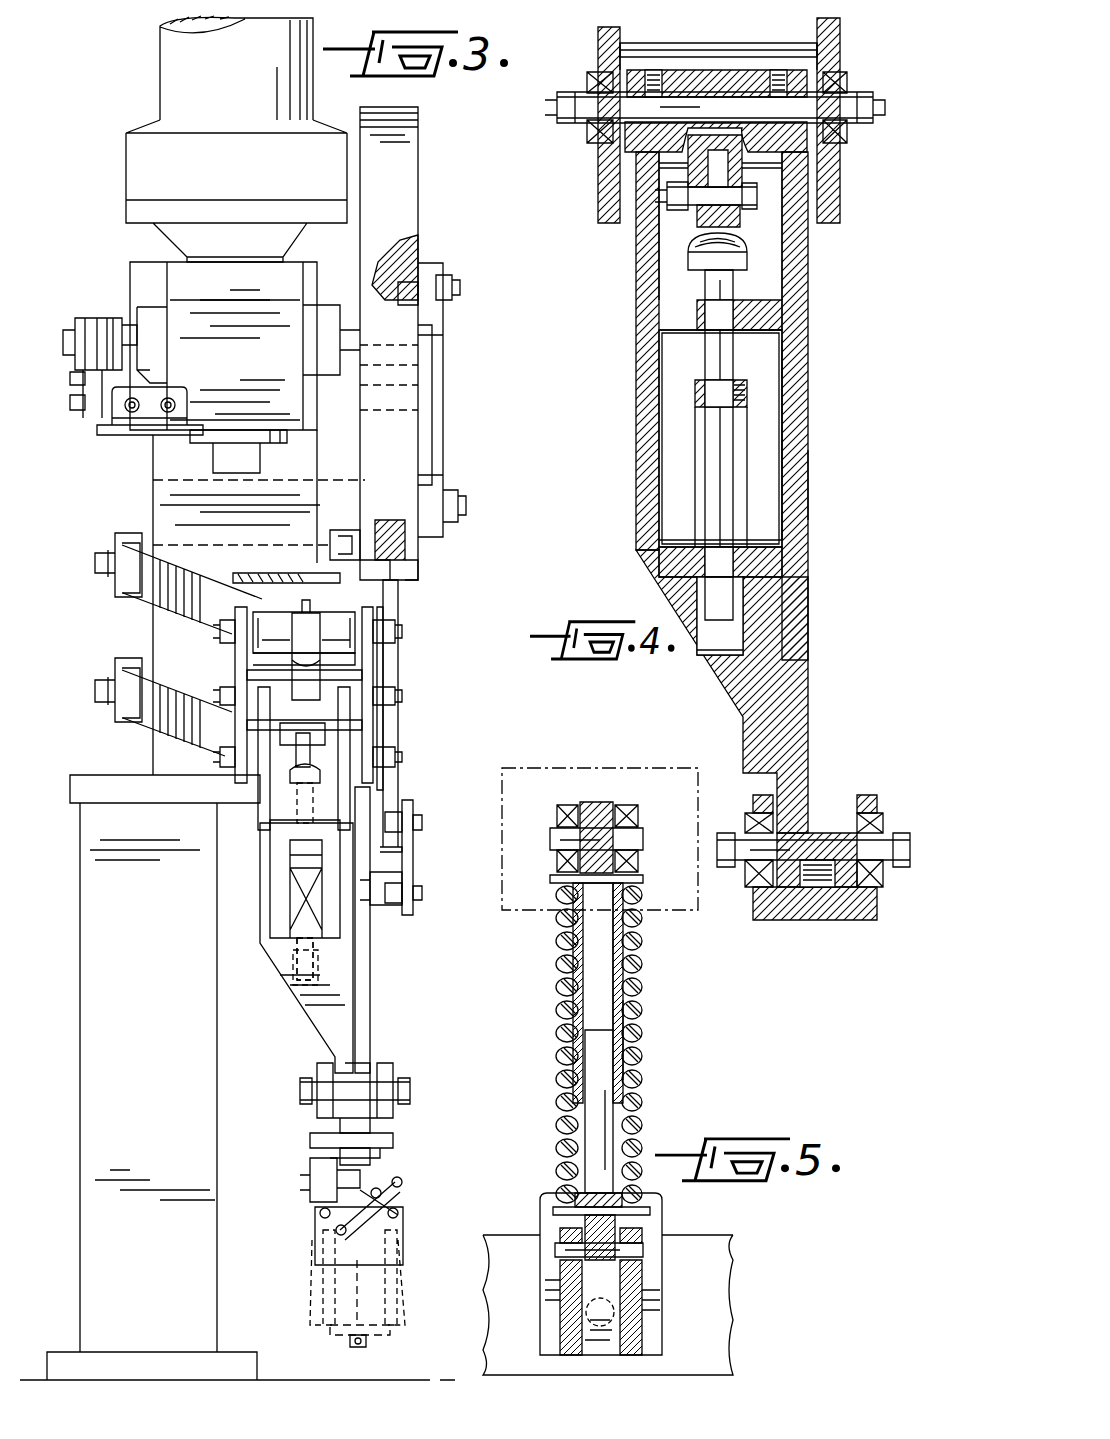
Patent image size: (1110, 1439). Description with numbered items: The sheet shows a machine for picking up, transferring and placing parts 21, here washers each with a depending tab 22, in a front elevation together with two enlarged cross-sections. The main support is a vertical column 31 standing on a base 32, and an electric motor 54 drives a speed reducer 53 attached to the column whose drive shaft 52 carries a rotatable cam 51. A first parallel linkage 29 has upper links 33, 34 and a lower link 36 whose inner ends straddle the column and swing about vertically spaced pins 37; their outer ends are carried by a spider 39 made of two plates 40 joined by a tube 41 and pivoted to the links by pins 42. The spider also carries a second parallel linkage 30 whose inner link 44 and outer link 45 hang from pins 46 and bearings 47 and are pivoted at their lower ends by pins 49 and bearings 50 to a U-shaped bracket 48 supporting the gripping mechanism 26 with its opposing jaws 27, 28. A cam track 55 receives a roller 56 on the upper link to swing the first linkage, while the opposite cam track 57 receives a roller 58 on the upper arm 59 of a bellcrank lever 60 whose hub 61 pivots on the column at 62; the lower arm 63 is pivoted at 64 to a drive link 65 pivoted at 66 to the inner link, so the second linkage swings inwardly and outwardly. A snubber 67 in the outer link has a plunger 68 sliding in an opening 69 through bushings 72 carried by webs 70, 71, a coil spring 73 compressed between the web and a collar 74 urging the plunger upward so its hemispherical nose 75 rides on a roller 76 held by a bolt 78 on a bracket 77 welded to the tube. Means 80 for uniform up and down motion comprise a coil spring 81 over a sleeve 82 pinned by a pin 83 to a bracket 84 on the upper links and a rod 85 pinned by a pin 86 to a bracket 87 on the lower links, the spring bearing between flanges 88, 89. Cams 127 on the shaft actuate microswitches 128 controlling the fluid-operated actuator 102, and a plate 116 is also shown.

In FIG. 3, the part 21 is at (372, 1335).
In FIG. 3, the tab 22 is at (355, 1345).
In FIG. 3, the gripping mechanism 26 is at (412, 1226).
In FIG. 3, the jaw 27 is at (395, 1290).
In FIG. 3, the jaw 28 is at (322, 1275).
In FIG. 3, the parallel linkage 29 is at (205, 684).
In FIG. 3, the parallel linkage 30 is at (262, 976).
In FIG. 4, the parallel linkage 30 is at (830, 486).
In FIG. 3, the column 31 is at (153, 485).
In FIG. 3, the base 32 is at (87, 1063).
In FIG. 3, the upper link 33 is at (398, 598).
In FIG. 3, the upper link 34 is at (170, 605).
In FIG. 3, the lower link 36 is at (165, 725).
In FIG. 3, the pin 37 is at (96, 562).
In FIG. 3, the spider 39 is at (385, 678).
In FIG. 4, the spider 39 is at (840, 50).
In FIG. 3, the plate 40 is at (240, 718).
In FIG. 4, the plate 40 is at (598, 200).
In FIG. 3, the tube 41 is at (355, 645).
In FIG. 4, the tube 41 is at (718, 48).
In FIG. 3, the pin 42 is at (228, 628).
In FIG. 3, the inner link 44 is at (370, 990).
In FIG. 3, the outer link 45 is at (262, 915).
In FIG. 4, the outer link 45 is at (790, 652).
In FIG. 3, the pin 46 is at (395, 700).
In FIG. 4, the pin 46 is at (672, 100).
In FIG. 4, the bearing 47 is at (590, 135).
In FIG. 3, the U-shaped bracket 48 is at (320, 1120).
In FIG. 4, the U-shaped bracket 48 is at (835, 918).
In FIG. 3, the pin 49 is at (400, 1092).
In FIG. 4, the pin 49 is at (830, 840).
In FIG. 4, the bearing 50 is at (745, 830).
In FIG. 3, the cam 51 is at (400, 160).
In FIG. 3, the drive shaft 52 is at (345, 345).
In FIG. 3, the speed reducer 53 is at (205, 270).
In FIG. 3, the electric motor 54 is at (160, 75).
In FIG. 3, the cam track 55 is at (395, 525).
In FIG. 3, the roller 56 is at (385, 560).
In FIG. 3, the cam track 57 is at (405, 245).
In FIG. 3, the roller 58 is at (430, 288).
In FIG. 3, the upper arm 59 is at (445, 325).
In FIG. 3, the bellcrank lever 60 is at (457, 450).
In FIG. 3, the hub 61 is at (435, 535).
In FIG. 3, the pivot 62 is at (470, 507).
In FIG. 3, the lower arm 63 is at (398, 808).
In FIG. 3, the pivot 64 is at (425, 822).
In FIG. 3, the drive link 65 is at (415, 865).
In FIG. 3, the pivot 66 is at (425, 893).
In FIG. 3, the snubber 67 is at (284, 870).
In FIG. 4, the snubber 67 is at (692, 368).
In FIG. 4, the plunger 68 is at (735, 350).
In FIG. 4, the opening 69 is at (770, 430).
In FIG. 4, the web 70 is at (680, 300).
In FIG. 4, the web 71 is at (760, 545).
In FIG. 4, the bushing 72 is at (740, 312).
In FIG. 4, the coil spring 73 is at (695, 455).
In FIG. 4, the collar 74 is at (695, 390).
In FIG. 3, the nose 75 is at (300, 790).
In FIG. 4, the nose 75 is at (745, 258).
In FIG. 3, the roller 76 is at (298, 775).
In FIG. 4, the roller 76 is at (730, 232).
In FIG. 4, the bracket 77 is at (722, 180).
In FIG. 4, the bolt 78 is at (705, 200).
In FIG. 3, the means for promoting uniform up and down motion 80 is at (305, 620).
In FIG. 5, the means for promoting uniform up and down motion 80 is at (652, 1044).
In FIG. 5, the coil spring 81 is at (645, 962).
In FIG. 5, the sleeve 82 is at (640, 985).
In FIG. 5, the pin 83 is at (620, 838).
In FIG. 5, the bracket 84 is at (620, 805).
In FIG. 5, the rod 85 is at (610, 1125).
In FIG. 5, the pin 86 is at (640, 1250).
In FIG. 5, the bracket 87 is at (640, 1320).
In FIG. 5, the flange 88 is at (630, 880).
In FIG. 5, the flange 89 is at (650, 1210).
In FIG. 3, the fluid-operated actuator 102 is at (302, 1210).
In FIG. 3, the plate 116 is at (385, 1140).
In FIG. 3, the cam 127 is at (100, 310).
In FIG. 3, the microswitch 128 is at (90, 395).